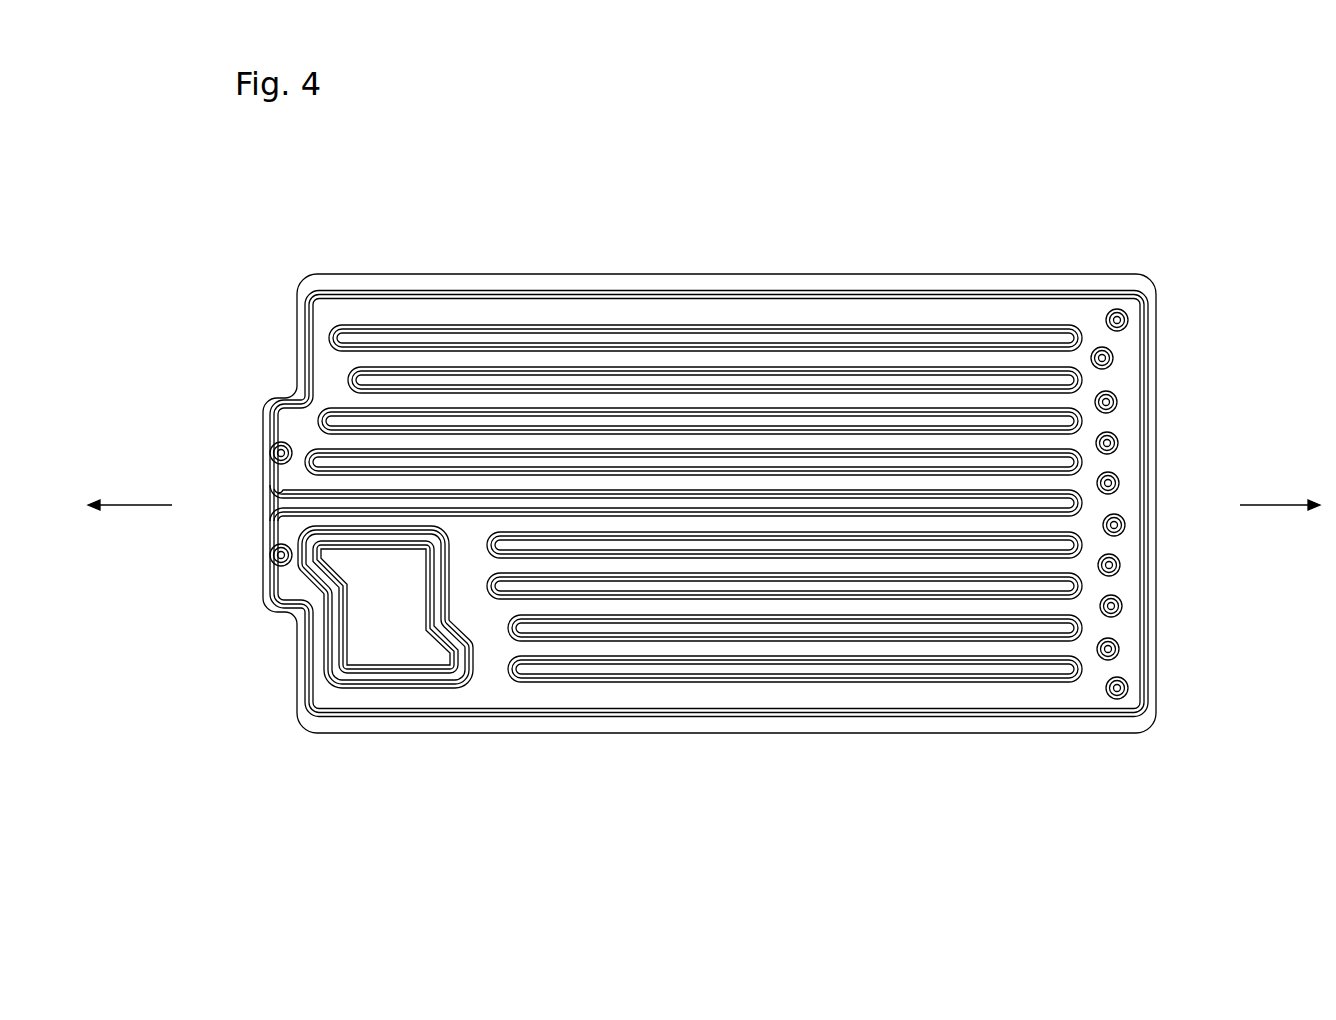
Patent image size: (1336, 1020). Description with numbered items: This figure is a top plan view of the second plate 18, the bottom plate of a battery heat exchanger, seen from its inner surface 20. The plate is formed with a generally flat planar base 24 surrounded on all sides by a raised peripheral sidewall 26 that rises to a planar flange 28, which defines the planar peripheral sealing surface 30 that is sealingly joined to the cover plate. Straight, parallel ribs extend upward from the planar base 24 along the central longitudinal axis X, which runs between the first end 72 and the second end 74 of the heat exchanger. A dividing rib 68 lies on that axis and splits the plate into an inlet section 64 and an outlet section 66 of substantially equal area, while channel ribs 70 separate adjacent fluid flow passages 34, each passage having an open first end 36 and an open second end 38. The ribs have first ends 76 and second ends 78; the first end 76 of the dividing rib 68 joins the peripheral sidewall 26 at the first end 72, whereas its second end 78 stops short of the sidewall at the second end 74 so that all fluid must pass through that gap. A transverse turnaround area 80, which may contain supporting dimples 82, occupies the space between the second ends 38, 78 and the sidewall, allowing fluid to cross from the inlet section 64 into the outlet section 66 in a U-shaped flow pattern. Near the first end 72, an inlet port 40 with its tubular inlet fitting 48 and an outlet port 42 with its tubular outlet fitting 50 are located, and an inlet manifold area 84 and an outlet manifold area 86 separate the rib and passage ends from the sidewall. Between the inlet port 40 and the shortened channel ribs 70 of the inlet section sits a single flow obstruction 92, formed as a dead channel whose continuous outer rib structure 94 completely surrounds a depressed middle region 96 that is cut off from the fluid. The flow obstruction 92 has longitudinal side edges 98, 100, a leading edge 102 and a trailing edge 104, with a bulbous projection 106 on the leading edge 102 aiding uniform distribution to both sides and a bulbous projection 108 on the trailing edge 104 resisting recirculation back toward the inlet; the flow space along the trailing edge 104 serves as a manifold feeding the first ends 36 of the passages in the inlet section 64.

The second plate 18 is at (704, 468).
The inner surface 20 is at (1127, 633).
The planar base 24 is at (723, 496).
The peripheral sidewall 26 is at (654, 499).
The planar flange 28 is at (756, 468).
The planar peripheral sealing surface 30 is at (756, 468).
The fluid flow passages 34 is at (723, 496).
The first ends 36 is at (723, 496).
The second ends 38 is at (1062, 403).
The inlet port 40 is at (213, 582).
The outlet port 42 is at (215, 425).
The tubular inlet fitting 48 is at (285, 568).
The tubular outlet fitting 50 is at (275, 447).
The inlet section 64 is at (745, 500).
The outlet section 66 is at (745, 496).
The dividing rib 68 is at (745, 500).
The channel ribs 70 is at (723, 496).
The first end 72 is at (654, 547).
The second end 74 is at (1158, 525).
The first ends 76 is at (661, 547).
The second ends 78 is at (745, 500).
The turnaround area 80 is at (1161, 504).
The dimples 82 is at (1161, 504).
The inlet manifold area 84 is at (467, 627).
The outlet manifold area 86 is at (661, 547).
The flow obstruction 92 is at (371, 515).
The continuous outer rib structure 94 is at (371, 511).
The depressed middle region 96 is at (371, 473).
The side edge 98 is at (360, 700).
The side edge 100 is at (371, 473).
The leading edge 102 is at (371, 477).
The trailing edge 104 is at (377, 458).
The bulbous projection 106 is at (354, 607).
The bulbous projection 108 is at (354, 607).